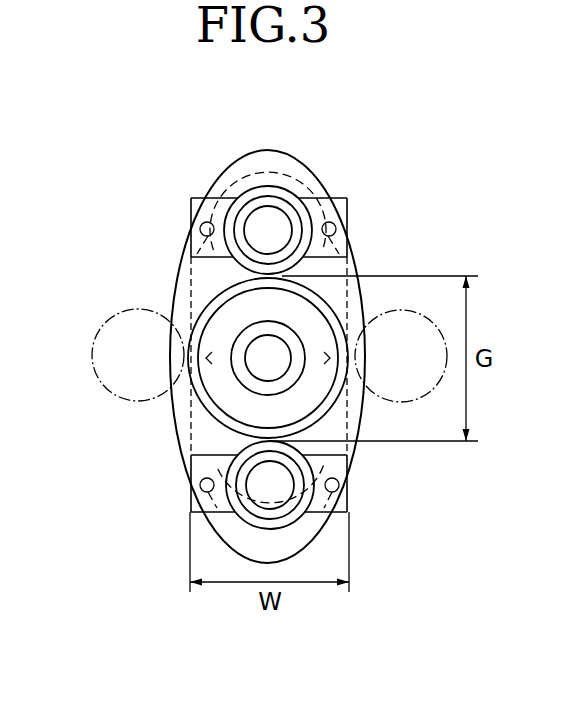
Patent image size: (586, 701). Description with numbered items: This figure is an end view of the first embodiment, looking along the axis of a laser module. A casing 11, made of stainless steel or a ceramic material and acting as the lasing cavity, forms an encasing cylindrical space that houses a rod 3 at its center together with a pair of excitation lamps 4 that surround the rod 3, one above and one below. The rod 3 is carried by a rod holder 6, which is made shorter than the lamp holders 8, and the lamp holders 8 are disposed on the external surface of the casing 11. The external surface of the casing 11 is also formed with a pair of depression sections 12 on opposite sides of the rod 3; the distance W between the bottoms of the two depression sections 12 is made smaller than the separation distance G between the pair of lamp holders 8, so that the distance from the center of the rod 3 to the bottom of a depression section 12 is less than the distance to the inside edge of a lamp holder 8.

The rod 3 is at (250, 378).
The excitation lamp 4 is at (283, 205).
The rod holder 6 is at (207, 307).
The lamp holder 8 is at (242, 185).
The casing 11 is at (346, 173).
The depression section 12 is at (176, 366).